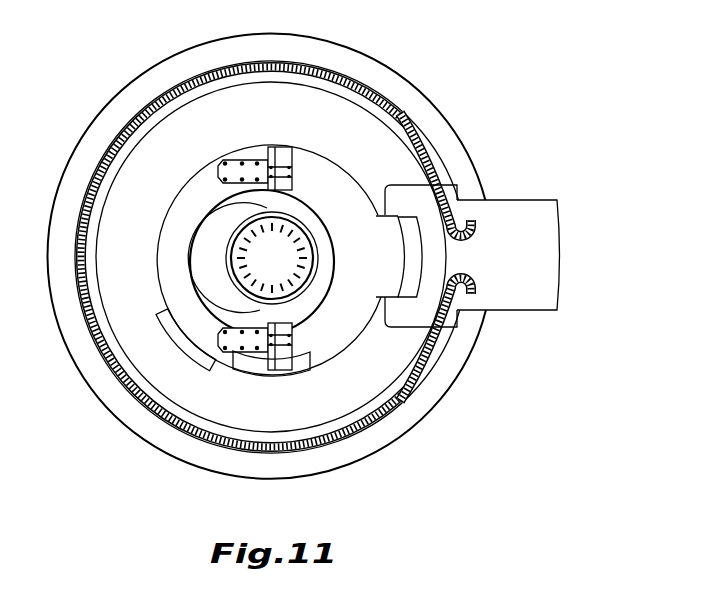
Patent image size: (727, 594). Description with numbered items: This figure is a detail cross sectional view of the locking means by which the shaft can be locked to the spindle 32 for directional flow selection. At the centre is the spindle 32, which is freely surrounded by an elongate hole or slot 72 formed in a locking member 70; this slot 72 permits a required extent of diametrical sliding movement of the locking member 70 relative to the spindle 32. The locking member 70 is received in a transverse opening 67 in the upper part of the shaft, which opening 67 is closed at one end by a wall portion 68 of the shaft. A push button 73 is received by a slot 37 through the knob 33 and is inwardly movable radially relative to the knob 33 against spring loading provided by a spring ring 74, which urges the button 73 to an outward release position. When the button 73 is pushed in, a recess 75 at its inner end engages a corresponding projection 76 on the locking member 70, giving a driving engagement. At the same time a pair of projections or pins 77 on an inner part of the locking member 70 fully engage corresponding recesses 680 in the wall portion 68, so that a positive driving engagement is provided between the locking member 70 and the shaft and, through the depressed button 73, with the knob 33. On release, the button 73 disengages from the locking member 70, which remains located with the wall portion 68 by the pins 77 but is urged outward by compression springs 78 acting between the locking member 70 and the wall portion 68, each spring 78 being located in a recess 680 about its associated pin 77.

The knob 33 is at (232, 50).
The spring ring 74 is at (325, 72).
The transverse opening 67 is at (335, 147).
The locking member 70 is at (347, 210).
The slot 37 is at (472, 200).
The compression spring 78 is at (256, 160).
The recess 680 is at (230, 172).
The pin 77 is at (288, 170).
The wall portion 68 is at (173, 233).
The spindle 32 is at (285, 270).
The projection 76 is at (407, 237).
The recess 75 is at (425, 263).
The push button 73 is at (540, 286).
The elongate hole or slot 72 is at (323, 270).